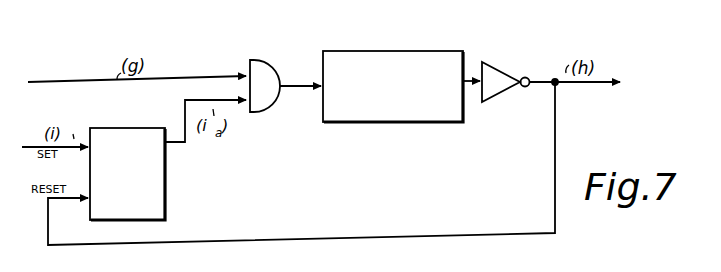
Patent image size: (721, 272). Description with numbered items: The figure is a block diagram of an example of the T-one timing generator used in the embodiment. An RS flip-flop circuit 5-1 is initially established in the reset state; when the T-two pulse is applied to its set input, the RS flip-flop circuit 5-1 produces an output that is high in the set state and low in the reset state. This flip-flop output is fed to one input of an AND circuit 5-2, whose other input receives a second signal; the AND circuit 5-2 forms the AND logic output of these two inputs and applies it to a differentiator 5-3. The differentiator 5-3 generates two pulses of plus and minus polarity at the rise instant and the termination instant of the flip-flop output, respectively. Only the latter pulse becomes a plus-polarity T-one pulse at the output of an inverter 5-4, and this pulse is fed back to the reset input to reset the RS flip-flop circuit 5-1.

The RS flip-flop circuit 5-1 is at (140, 127).
The AND circuit 5-2 is at (268, 59).
The differentiator 5-3 is at (437, 50).
The inverter 5-4 is at (526, 50).